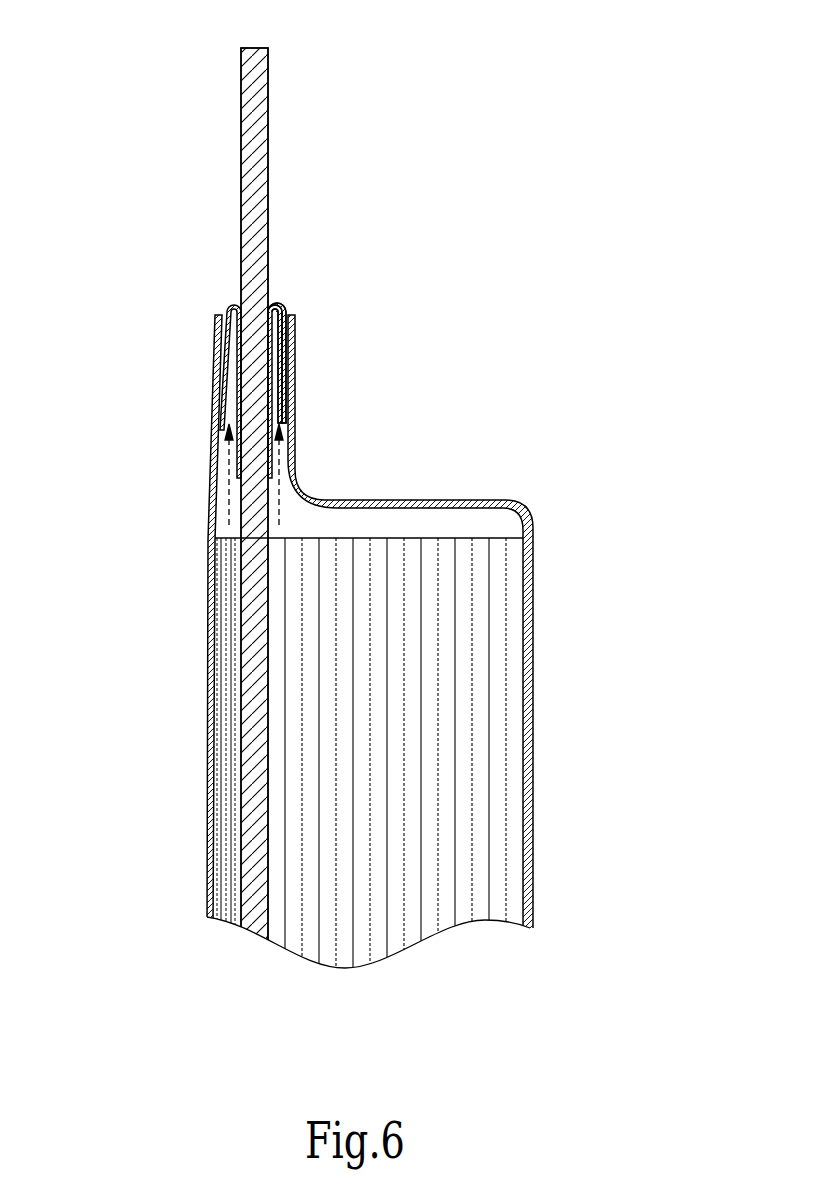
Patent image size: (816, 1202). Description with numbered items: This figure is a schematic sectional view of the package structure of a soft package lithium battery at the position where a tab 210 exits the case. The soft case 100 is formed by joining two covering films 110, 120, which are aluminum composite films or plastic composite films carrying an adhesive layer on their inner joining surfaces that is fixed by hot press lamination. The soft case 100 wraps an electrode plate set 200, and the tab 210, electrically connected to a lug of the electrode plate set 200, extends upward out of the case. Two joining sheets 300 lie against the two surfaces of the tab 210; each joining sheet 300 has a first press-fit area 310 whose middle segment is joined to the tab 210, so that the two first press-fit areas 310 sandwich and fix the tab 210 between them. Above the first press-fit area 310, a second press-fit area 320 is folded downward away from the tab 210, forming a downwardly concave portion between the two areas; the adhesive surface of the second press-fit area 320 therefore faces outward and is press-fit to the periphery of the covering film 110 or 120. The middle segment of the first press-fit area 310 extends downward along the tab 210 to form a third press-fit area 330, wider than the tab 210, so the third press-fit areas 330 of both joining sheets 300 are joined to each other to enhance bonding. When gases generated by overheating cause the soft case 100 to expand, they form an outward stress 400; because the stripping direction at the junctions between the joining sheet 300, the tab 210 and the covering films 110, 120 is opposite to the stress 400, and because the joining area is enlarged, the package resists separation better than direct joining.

The soft case 100 is at (376, 669).
The covering film 110 is at (205, 678).
The covering film 120 is at (534, 560).
The electrode plate set 200 is at (383, 927).
The tab 210 is at (262, 65).
The joining sheet 300 is at (244, 390).
The first press-fit area 310 is at (238, 397).
The second press-fit area 320 is at (216, 364).
The third press-fit area 330 is at (224, 466).
The stress 400 is at (229, 508).